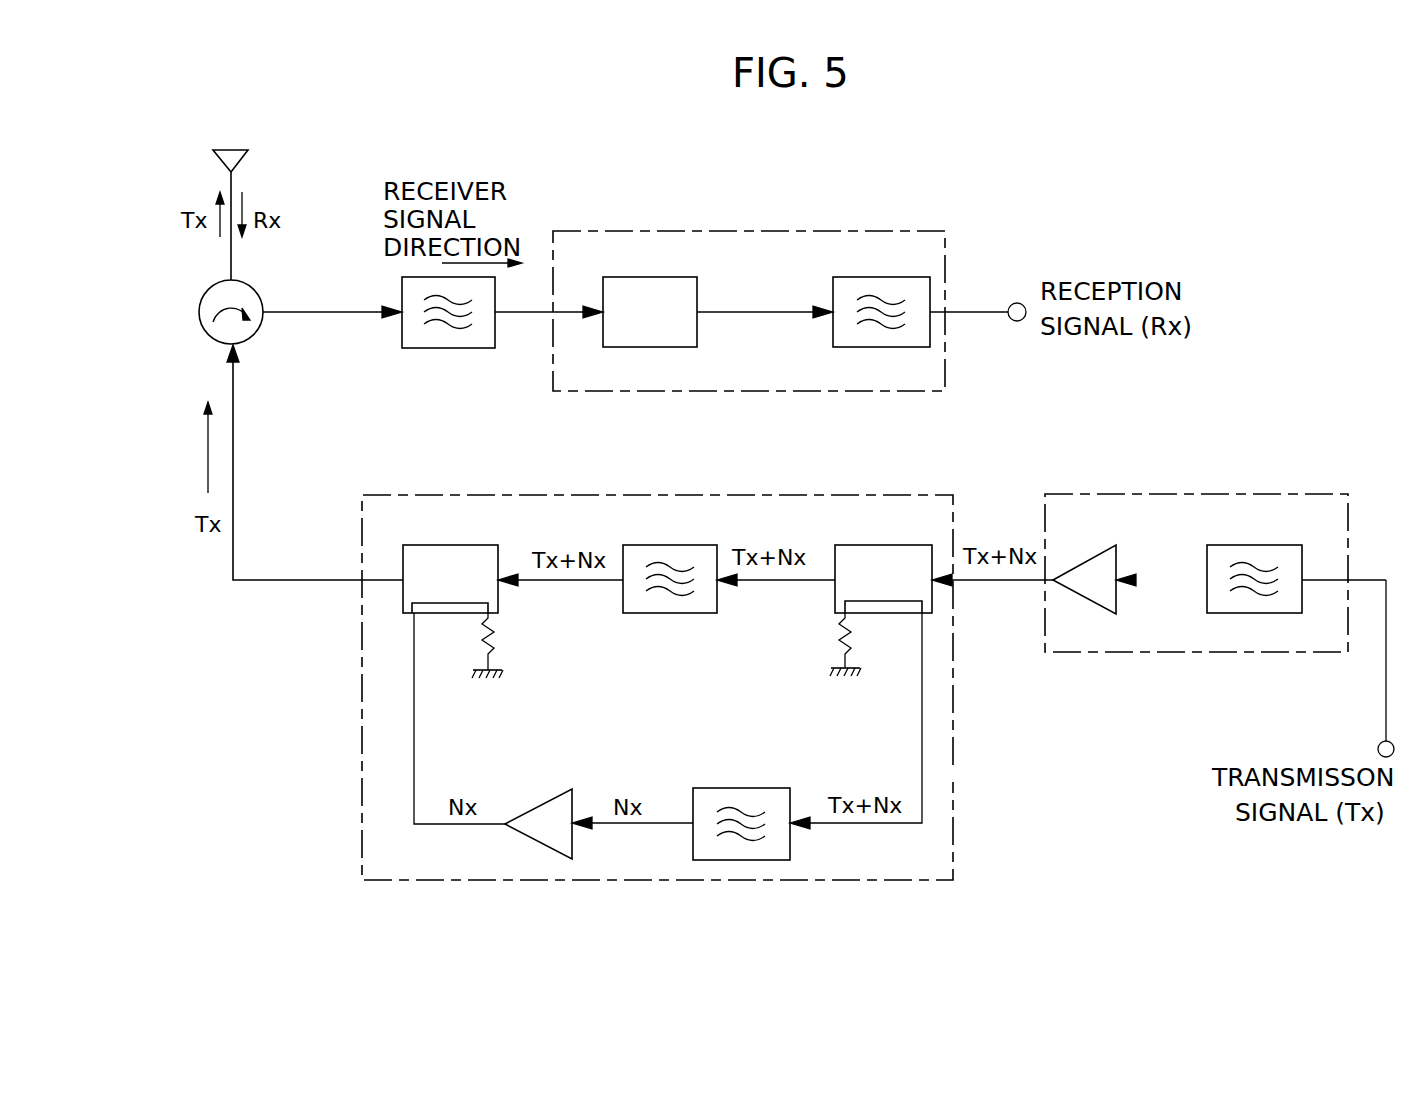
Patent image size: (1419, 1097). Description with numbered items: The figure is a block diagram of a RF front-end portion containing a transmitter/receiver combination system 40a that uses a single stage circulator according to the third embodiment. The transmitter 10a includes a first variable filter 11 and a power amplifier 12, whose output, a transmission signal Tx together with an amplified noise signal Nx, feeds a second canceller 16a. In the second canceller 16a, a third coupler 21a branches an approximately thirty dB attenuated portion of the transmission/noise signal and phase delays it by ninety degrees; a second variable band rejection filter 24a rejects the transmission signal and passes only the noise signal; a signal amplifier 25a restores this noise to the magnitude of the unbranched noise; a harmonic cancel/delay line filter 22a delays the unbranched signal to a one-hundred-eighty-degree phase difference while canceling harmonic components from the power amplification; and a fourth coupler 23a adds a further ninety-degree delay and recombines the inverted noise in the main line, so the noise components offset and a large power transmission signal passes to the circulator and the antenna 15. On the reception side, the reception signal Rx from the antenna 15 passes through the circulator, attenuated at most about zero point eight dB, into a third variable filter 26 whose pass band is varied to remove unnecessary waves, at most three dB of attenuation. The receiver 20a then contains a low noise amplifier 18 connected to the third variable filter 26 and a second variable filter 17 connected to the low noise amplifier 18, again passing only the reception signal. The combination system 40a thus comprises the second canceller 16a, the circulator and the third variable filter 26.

The antenna 15 is at (237, 162).
The third variable filter 26 is at (447, 350).
The receiver 20a is at (863, 231).
The low noise amplifier 18 is at (652, 347).
The second variable filter 17 is at (900, 347).
The transmitter 10a is at (1221, 494).
The power amplifier 12 is at (1085, 599).
The first variable filter 11 is at (1259, 613).
The second canceller 16a is at (953, 780).
The third coupler 21a is at (902, 545).
The harmonic cancel/delay line filter 22a is at (693, 545).
The fourth coupler 23a is at (465, 545).
The second variable band rejection filter 24a is at (752, 788).
The signal amplifier 25a is at (543, 803).
The transmitter/receiver combination system 40a is at (262, 591).